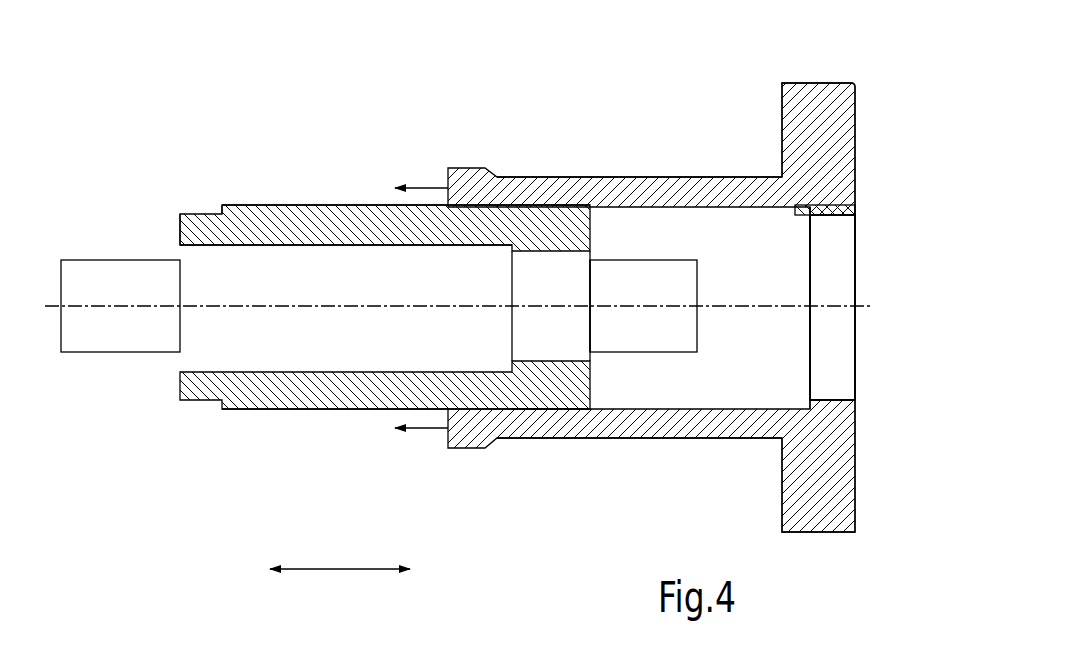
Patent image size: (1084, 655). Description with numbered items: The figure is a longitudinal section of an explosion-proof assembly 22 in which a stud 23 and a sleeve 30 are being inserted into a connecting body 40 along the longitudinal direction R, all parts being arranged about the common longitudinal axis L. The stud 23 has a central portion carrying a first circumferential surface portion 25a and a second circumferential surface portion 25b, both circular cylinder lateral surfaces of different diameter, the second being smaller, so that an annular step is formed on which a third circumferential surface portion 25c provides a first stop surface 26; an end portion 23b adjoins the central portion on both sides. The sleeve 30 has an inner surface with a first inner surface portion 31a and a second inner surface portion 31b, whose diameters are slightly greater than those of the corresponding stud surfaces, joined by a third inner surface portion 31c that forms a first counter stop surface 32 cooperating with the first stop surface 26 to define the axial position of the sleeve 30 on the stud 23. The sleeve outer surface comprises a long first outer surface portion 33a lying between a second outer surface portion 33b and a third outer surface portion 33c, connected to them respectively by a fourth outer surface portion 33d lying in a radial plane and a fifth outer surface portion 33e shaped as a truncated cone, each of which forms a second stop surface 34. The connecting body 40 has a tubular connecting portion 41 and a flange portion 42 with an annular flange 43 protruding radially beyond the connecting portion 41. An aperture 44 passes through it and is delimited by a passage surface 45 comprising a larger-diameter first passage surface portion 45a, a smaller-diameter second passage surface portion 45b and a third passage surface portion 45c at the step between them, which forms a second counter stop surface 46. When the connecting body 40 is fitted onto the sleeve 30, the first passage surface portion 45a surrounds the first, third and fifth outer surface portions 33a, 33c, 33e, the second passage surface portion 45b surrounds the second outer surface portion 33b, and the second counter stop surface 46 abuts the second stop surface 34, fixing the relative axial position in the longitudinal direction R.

The explosion-proof assembly 22 is at (731, 115).
The stud 23 is at (200, 355).
The end portion 23b is at (117, 260).
The first circumferential surface portion 25a is at (270, 348).
The second circumferential surface portion 25b is at (566, 292).
The third circumferential surface portion 25c is at (639, 471).
The first stop surface 26 is at (548, 438).
The sleeve 30 is at (370, 205).
The first inner surface portion 31a is at (350, 247).
The second inner surface portion 31b is at (549, 361).
The third inner surface portion 31c is at (460, 304).
The first counter stop surface 32 is at (503, 247).
The first outer surface portion 33a is at (328, 205).
The second outer surface portion 33b is at (565, 207).
The third outer surface portion 33c is at (199, 212).
The fourth outer surface portion 33d is at (527, 398).
The fifth outer surface portion 33e is at (257, 175).
The second stop surface 34 is at (218, 207).
The connecting body 40 is at (700, 438).
The connecting portion 41 is at (672, 177).
The flange portion 42 is at (808, 232).
The annular flange 43 is at (832, 83).
The aperture 44 is at (840, 356).
The passage surface 45 is at (747, 380).
The first passage surface portion 45a is at (778, 406).
The second passage surface portion 45b is at (826, 216).
The third passage surface portion 45c is at (788, 230).
The second counter stop surface 46 is at (808, 213).
The longitudinal axis L is at (75, 312).
The longitudinal direction R is at (343, 570).